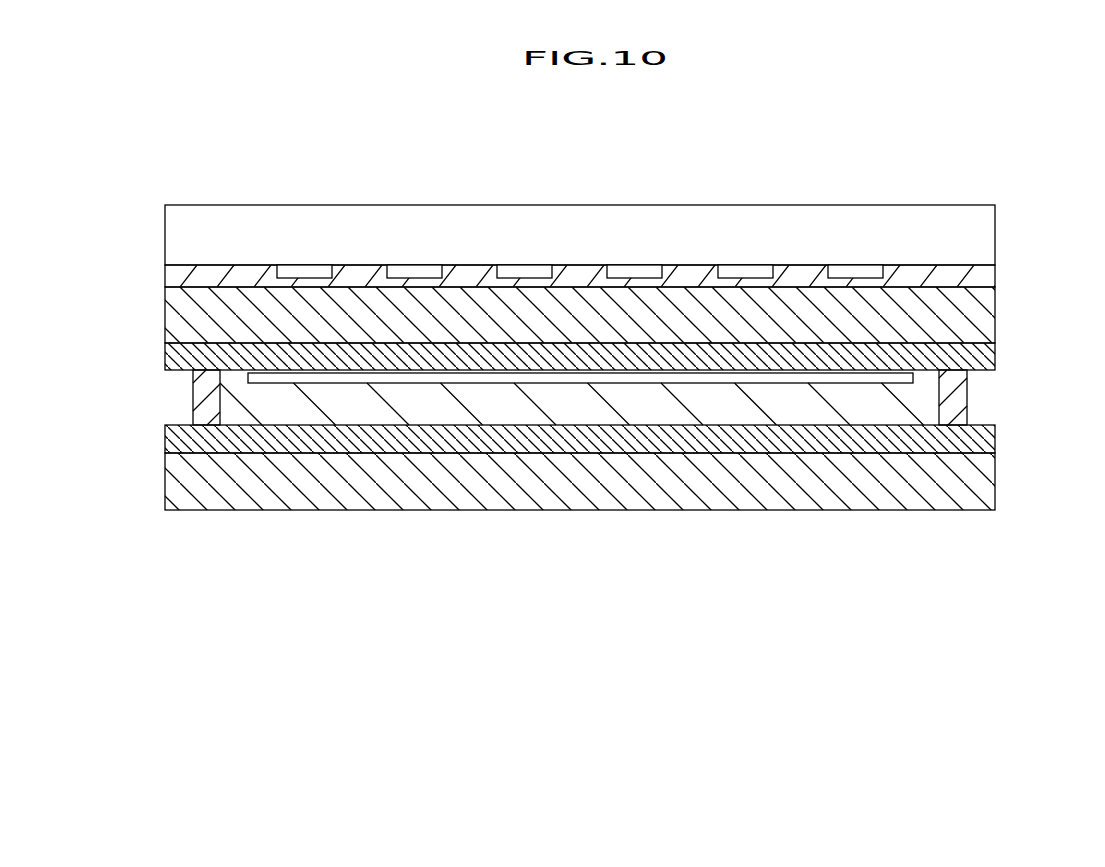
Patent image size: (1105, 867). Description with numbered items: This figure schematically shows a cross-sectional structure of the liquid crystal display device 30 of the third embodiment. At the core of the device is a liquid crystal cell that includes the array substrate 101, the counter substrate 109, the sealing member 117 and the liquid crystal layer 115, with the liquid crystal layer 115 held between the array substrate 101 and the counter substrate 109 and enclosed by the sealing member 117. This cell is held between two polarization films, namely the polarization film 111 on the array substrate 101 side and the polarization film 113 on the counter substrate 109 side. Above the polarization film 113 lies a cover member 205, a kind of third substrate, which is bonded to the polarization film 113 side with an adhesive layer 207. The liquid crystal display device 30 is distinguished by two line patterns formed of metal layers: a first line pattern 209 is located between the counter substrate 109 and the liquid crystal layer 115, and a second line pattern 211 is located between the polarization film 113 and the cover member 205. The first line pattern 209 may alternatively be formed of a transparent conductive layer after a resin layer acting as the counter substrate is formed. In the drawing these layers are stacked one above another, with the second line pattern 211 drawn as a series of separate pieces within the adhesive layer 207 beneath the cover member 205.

The liquid crystal display device 30 is at (918, 184).
The cover member 205 is at (996, 228).
The adhesive layer 207 is at (993, 285).
The second line pattern 211 is at (746, 271).
The polarization film 113 is at (993, 305).
The counter substrate 109 is at (993, 350).
The sealing member 117 is at (968, 383).
The liquid crystal layer 115 is at (928, 417).
The first line pattern 209 is at (207, 383).
The array substrate 101 is at (995, 447).
The polarization film 111 is at (995, 494).